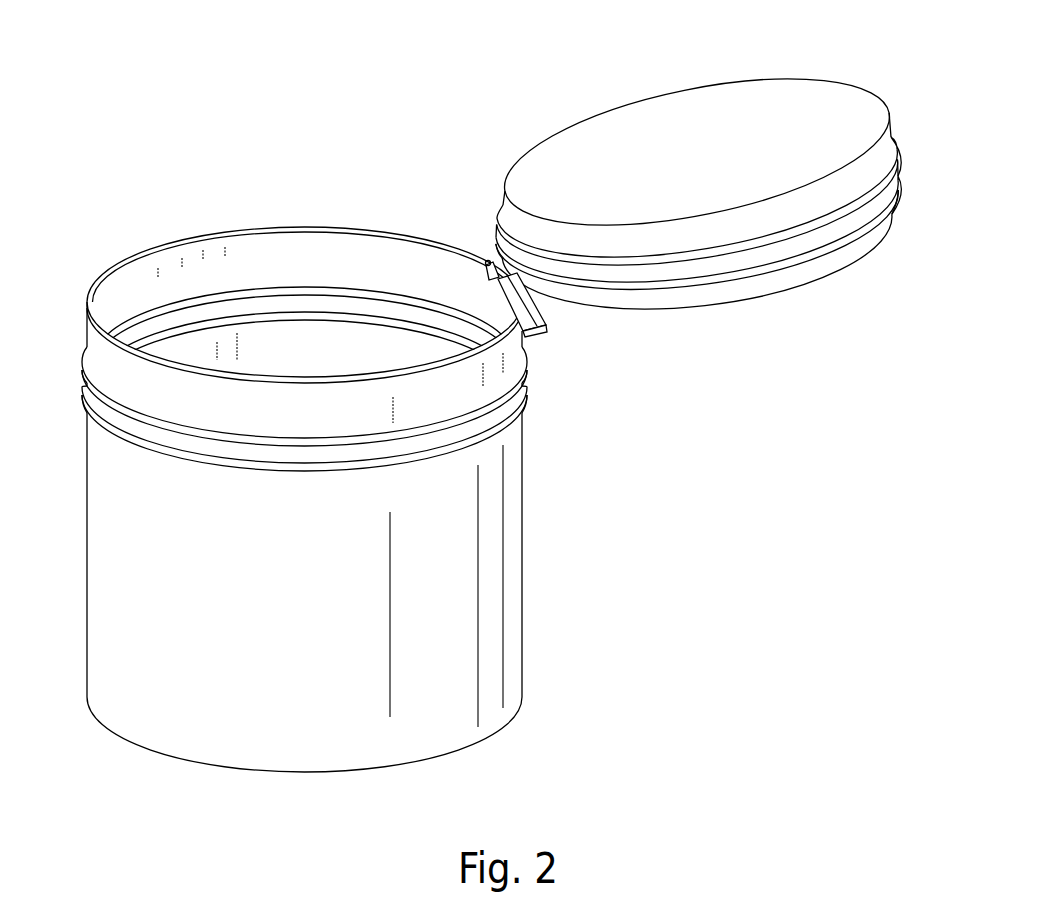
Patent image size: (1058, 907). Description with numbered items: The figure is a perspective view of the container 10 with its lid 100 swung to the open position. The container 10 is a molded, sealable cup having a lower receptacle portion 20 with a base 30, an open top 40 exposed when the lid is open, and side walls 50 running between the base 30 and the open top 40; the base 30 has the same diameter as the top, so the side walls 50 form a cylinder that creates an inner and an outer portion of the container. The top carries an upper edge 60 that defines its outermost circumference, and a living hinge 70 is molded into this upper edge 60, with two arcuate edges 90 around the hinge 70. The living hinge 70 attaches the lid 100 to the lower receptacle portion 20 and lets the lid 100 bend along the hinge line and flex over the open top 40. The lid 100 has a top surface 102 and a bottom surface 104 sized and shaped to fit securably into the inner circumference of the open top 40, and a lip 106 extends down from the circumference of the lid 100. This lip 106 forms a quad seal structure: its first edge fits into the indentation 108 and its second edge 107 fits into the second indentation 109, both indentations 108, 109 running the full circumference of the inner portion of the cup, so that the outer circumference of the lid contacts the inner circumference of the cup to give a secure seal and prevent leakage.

The container 10 is at (503, 405).
The lower receptacle portion 20 is at (323, 480).
The base 30 is at (443, 757).
The open top 40 is at (318, 338).
The side walls 50 is at (86, 553).
The upper edge 60 is at (278, 228).
The living hinge 70 is at (546, 322).
The arcuate edges 90 is at (487, 259).
The lid 100 is at (727, 186).
The top surface 102 is at (733, 299).
The bottom surface 104 is at (678, 118).
The lip 106 is at (898, 203).
The second edge 107 is at (892, 133).
The indentation 108 is at (85, 364).
The second indentation 109 is at (84, 398).